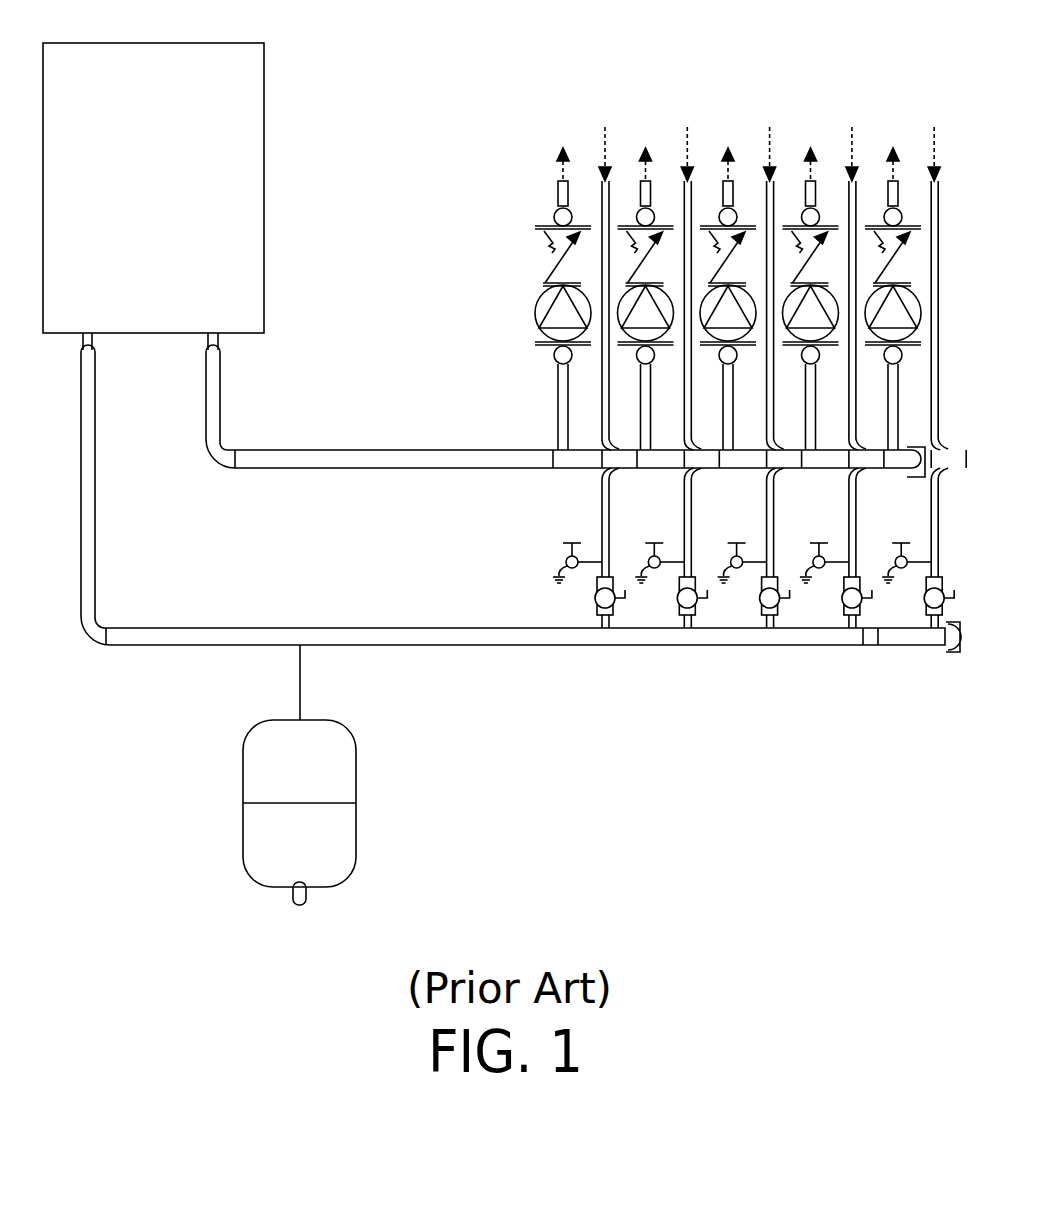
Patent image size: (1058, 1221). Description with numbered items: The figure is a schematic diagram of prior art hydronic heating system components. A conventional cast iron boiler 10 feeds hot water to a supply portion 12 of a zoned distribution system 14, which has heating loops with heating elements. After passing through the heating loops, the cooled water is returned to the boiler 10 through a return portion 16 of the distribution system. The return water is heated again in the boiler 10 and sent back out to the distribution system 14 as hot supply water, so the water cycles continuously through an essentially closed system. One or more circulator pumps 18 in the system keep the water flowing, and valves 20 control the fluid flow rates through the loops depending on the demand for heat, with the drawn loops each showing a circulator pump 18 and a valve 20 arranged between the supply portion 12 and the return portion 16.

The boiler 10 is at (264, 133).
The supply portion 12 is at (353, 450).
The zoned distribution system 14 is at (709, 329).
The return portion 16 is at (280, 628).
The circulator pump 18 is at (535, 308).
The valve 20 is at (553, 268).